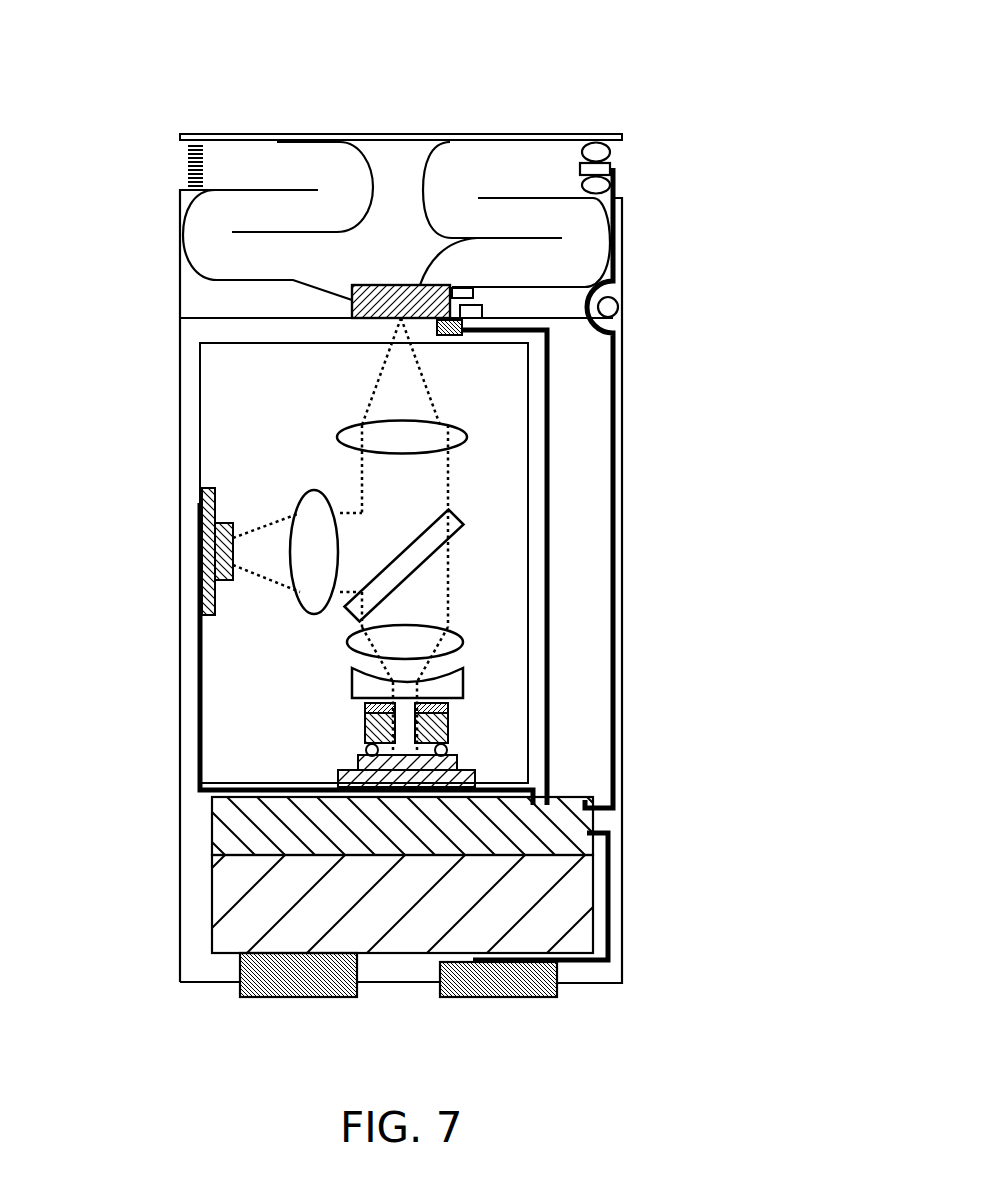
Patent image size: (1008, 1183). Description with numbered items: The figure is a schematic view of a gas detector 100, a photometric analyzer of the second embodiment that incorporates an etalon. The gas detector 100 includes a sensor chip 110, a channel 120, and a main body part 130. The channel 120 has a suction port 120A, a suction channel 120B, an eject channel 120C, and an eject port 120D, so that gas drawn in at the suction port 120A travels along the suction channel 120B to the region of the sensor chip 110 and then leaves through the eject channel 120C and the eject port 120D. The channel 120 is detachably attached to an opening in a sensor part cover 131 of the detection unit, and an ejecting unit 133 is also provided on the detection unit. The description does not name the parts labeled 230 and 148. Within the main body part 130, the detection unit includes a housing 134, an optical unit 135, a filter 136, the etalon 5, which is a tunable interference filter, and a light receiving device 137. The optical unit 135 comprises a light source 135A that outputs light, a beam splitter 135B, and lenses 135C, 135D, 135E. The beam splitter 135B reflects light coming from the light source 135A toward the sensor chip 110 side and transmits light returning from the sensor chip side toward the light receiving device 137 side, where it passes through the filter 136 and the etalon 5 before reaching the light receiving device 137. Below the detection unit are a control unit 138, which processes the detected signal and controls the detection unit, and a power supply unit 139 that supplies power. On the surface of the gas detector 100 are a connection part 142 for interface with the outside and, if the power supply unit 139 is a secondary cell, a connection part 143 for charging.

The gas detector 100 is at (733, 40).
The channel 120 is at (399, 165).
The suction port 120A is at (168, 151).
The suction channel 120B is at (270, 162).
The eject channel 120C is at (524, 165).
The eject port 120D is at (631, 182).
The sensor part cover 131 is at (430, 134).
The ejecting unit 133 is at (610, 147).
The engagement portion 230 is at (186, 160).
The sensor chip 110 is at (400, 283).
The main body part 130 is at (631, 340).
The connection member 148 is at (463, 336).
The optical unit 135 is at (478, 500).
The light source 135A is at (200, 556).
The beam splitter 135B is at (460, 537).
The lens 135C is at (303, 608).
The lens 135D is at (467, 428).
The lens 135E is at (470, 622).
The filter 136 is at (449, 707).
The etalon 5 is at (450, 725).
The light receiving device 137 is at (458, 762).
The control unit 138 is at (212, 818).
The power supply unit 139 is at (212, 900).
The connection part 142 is at (302, 997).
The connection part for charging 143 is at (503, 997).
The housing 134 is at (622, 902).